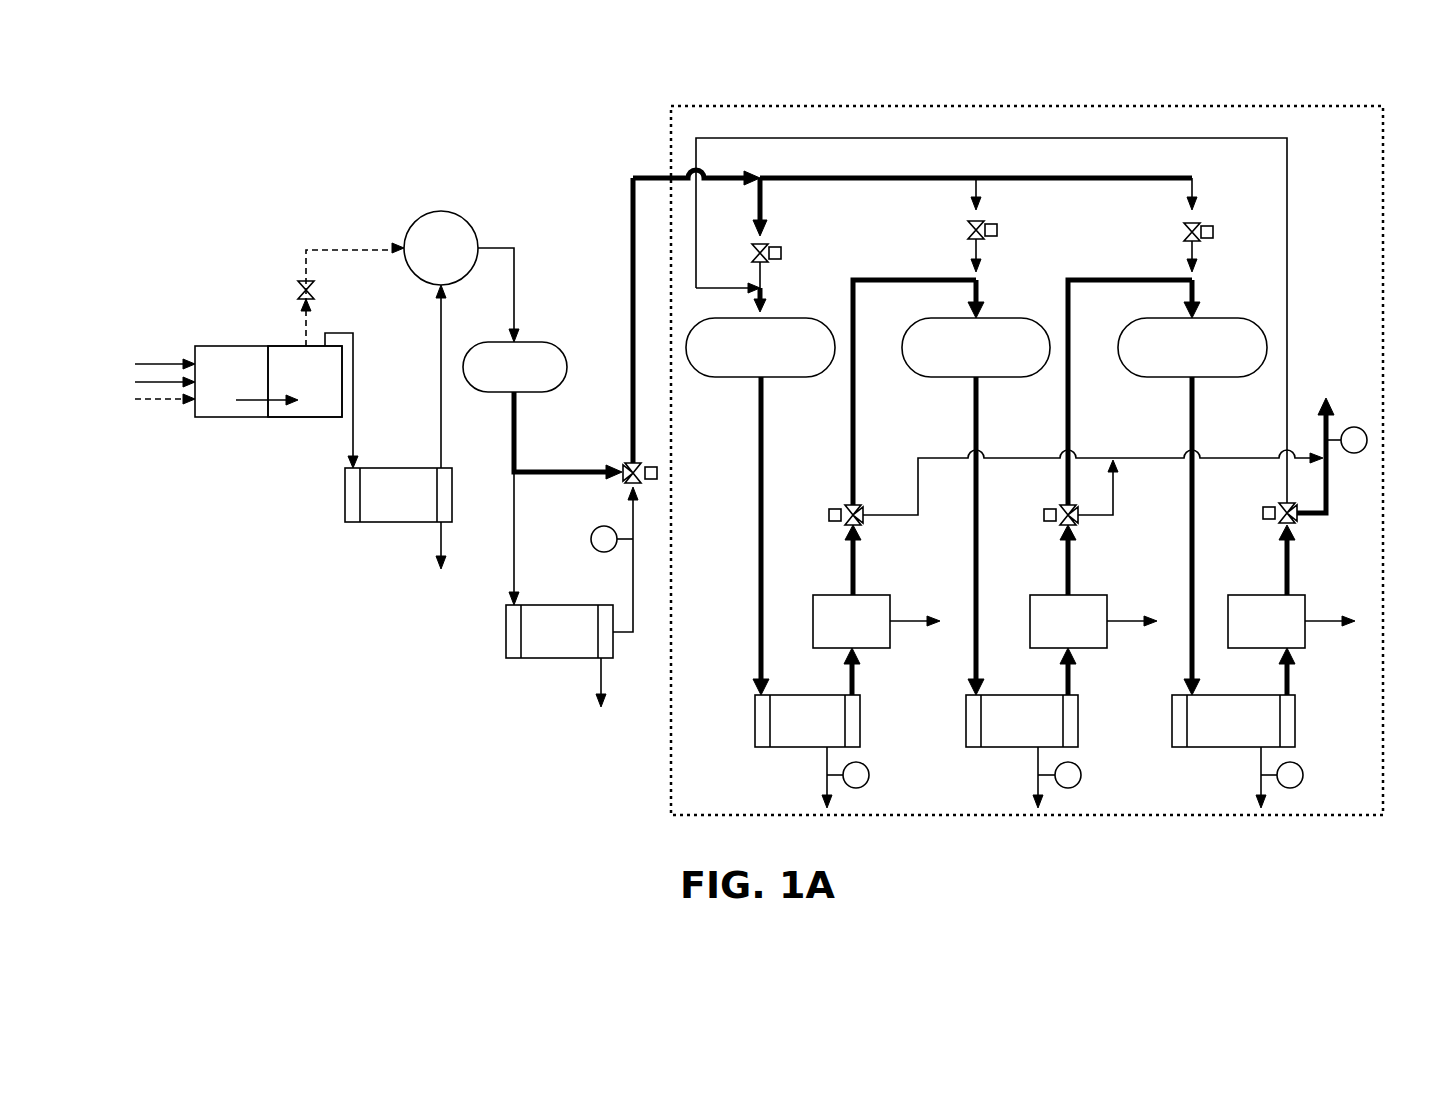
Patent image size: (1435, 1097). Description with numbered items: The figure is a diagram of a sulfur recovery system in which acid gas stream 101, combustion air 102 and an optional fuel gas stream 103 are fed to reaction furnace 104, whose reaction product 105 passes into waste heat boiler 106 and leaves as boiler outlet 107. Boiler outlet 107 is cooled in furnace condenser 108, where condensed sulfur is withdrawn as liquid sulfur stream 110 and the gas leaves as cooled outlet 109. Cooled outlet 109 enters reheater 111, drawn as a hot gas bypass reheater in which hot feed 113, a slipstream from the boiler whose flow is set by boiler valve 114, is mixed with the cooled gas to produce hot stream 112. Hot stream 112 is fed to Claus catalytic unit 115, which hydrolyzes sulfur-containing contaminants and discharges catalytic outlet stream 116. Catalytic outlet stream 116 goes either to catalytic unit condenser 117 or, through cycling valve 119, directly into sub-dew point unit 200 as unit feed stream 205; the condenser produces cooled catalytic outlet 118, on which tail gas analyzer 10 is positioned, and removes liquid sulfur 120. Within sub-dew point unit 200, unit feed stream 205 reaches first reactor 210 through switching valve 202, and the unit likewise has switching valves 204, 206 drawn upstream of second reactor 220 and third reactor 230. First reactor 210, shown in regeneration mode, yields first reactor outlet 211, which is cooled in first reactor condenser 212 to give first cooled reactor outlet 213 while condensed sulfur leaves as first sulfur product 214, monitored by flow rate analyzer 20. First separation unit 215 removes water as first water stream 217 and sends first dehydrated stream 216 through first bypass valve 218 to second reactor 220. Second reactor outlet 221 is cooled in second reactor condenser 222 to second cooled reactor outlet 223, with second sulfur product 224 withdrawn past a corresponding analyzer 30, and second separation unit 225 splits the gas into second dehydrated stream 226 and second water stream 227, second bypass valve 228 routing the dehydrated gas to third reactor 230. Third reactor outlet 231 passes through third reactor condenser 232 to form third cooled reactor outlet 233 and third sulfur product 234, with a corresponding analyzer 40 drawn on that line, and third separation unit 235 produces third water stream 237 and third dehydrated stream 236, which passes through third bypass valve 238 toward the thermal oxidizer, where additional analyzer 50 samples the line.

The tail gas analyzer 10 is at (591, 539).
The flow rate analyzer 20 is at (866, 765).
The sensor 30 is at (1078, 765).
The sensor 40 is at (1300, 765).
The additional analyzer 50 is at (1362, 428).
The acid gas stream 101 is at (160, 364).
The combustion air 102 is at (135, 382).
The fuel gas stream 103 is at (150, 399).
The reaction furnace 104 is at (256, 383).
The reaction product 105 is at (250, 405).
The waste heat boiler 106 is at (327, 383).
The boiler outlet 107 is at (353, 435).
The furnace condenser 108 is at (422, 505).
The cooled outlet 109 is at (441, 430).
The liquid sulfur stream 110 is at (441, 537).
The reheater 111 is at (465, 261).
The hot stream 112 is at (495, 248).
The hot feed 113 is at (306, 250).
The boiler valve 114 is at (300, 290).
The Claus catalytic unit 115 is at (538, 377).
The catalytic outlet stream 116 is at (514, 430).
The catalytic unit condenser 117 is at (583, 642).
The cooled catalytic outlet 118 is at (633, 585).
The cycling valve 119 is at (626, 482).
The liquid sulfur 120 is at (601, 680).
The sub-dew point unit 200 is at (671, 777).
The switching valve 202 is at (783, 253).
The valve 204 is at (997, 230).
The unit feed stream 205 is at (650, 178).
The valve 206 is at (1207, 225).
The first reactor 210 is at (783, 359).
The first reactor outlet 211 is at (761, 435).
The first reactor condenser 212 is at (830, 732).
The first cooled reactor outlet 213 is at (852, 678).
The first sulfur product 214 is at (827, 765).
The first separation unit 215 is at (875, 633).
The first dehydrated stream 216 is at (853, 560).
The first water stream 217 is at (906, 620).
The first bypass valve 218 is at (838, 508).
The second reactor 220 is at (999, 359).
The second reactor outlet 221 is at (976, 418).
The second reactor condenser 222 is at (1045, 732).
The second cooled reactor outlet 223 is at (1068, 678).
The second sulfur product 224 is at (1038, 765).
The second separation unit 225 is at (1092, 633).
The second dehydrated stream 226 is at (1068, 560).
The second water stream 227 is at (1121, 620).
The second bypass valve 228 is at (1052, 508).
The third reactor 230 is at (1215, 359).
The third reactor outlet 231 is at (1192, 425).
The third reactor condenser 232 is at (1257, 732).
The third cooled reactor outlet 233 is at (1287, 680).
The third sulfur product 234 is at (1261, 765).
The third separation unit 235 is at (1290, 633).
The third dehydrated stream 236 is at (1287, 570).
The third water stream 237 is at (1318, 620).
The third bypass valve 238 is at (1272, 506).